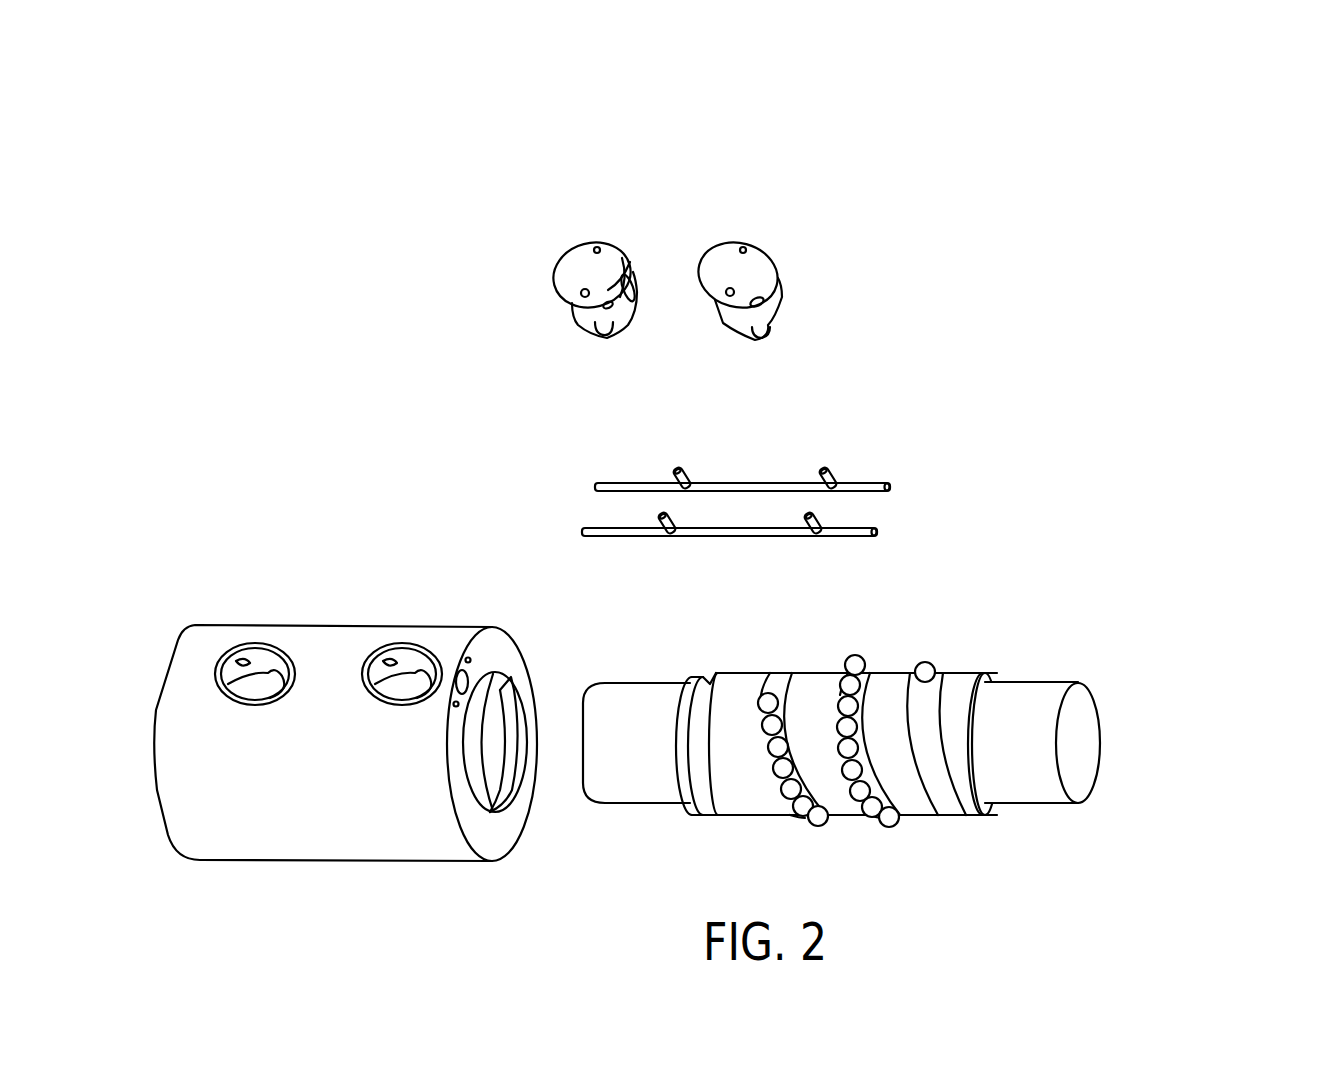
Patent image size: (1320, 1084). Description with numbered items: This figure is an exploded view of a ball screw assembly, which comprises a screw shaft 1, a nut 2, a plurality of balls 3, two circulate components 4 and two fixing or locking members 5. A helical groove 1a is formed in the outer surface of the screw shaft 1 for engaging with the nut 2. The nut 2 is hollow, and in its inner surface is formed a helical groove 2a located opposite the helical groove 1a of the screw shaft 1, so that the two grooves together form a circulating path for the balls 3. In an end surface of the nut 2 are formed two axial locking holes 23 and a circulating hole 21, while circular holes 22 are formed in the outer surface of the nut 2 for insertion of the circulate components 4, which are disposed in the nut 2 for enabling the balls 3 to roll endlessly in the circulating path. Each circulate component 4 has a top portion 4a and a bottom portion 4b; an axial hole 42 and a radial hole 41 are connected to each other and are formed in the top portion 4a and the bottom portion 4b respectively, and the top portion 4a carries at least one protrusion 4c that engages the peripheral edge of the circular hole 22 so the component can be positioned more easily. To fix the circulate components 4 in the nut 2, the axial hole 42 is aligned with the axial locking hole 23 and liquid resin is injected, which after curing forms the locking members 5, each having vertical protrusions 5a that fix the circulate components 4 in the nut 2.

The screw shaft 1 is at (923, 733).
The helical groove 1a is at (708, 682).
The nut 2 is at (350, 560).
The helical groove 2a is at (503, 770).
The circulating hole 21 is at (467, 673).
The circular holes 22 is at (270, 650).
The axial locking holes 23 is at (469, 659).
The balls 3 is at (855, 775).
The circulate components 4 is at (688, 229).
The top portion 4a is at (560, 276).
The bottom portion 4b is at (583, 318).
The protrusion 4c is at (714, 245).
The radial hole 41 is at (596, 248).
The axial hole 42 is at (626, 318).
The locking members 5 is at (823, 470).
The vertical protrusions 5a is at (747, 497).